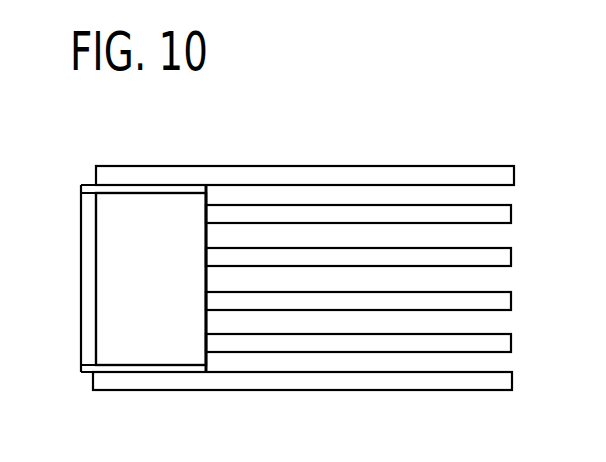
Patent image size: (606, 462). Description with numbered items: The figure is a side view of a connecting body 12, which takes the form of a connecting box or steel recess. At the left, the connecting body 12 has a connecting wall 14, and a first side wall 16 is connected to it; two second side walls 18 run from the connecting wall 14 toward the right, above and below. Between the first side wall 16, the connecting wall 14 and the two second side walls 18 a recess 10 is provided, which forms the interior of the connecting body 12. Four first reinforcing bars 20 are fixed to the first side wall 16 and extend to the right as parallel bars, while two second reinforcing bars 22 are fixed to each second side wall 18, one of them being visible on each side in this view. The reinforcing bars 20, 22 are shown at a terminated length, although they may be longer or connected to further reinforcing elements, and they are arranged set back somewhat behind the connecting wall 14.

The recess 10 is at (167, 332).
The connecting body 12 is at (345, 130).
The connecting wall 14 is at (84, 254).
The first side wall 16 is at (192, 250).
The second side walls 18 is at (146, 190).
The first reinforcing bars 20 is at (511, 262).
The second reinforcing bars 22 is at (454, 168).